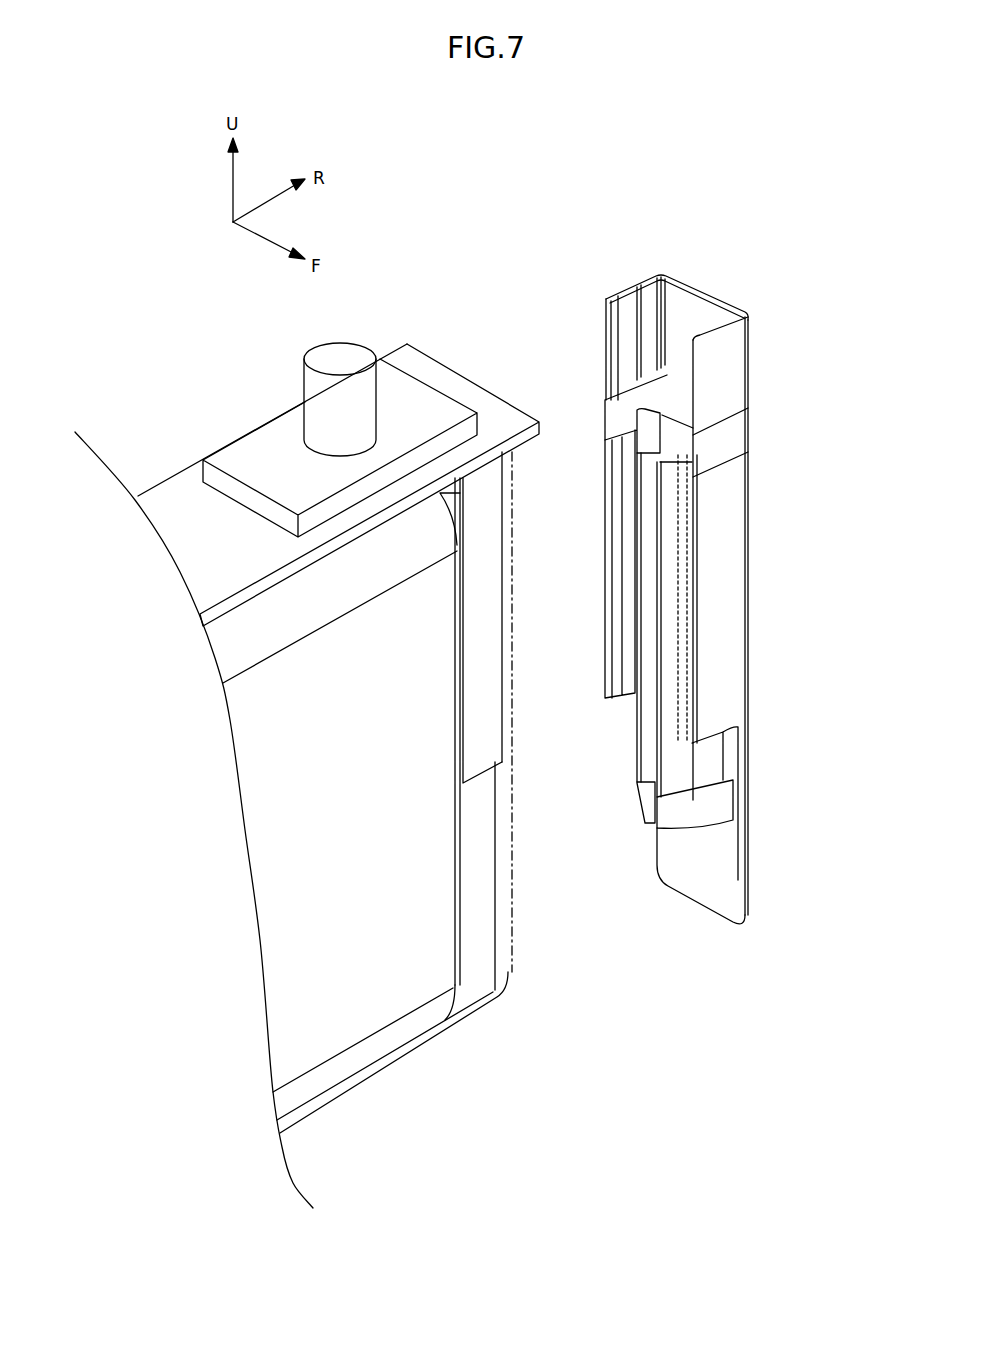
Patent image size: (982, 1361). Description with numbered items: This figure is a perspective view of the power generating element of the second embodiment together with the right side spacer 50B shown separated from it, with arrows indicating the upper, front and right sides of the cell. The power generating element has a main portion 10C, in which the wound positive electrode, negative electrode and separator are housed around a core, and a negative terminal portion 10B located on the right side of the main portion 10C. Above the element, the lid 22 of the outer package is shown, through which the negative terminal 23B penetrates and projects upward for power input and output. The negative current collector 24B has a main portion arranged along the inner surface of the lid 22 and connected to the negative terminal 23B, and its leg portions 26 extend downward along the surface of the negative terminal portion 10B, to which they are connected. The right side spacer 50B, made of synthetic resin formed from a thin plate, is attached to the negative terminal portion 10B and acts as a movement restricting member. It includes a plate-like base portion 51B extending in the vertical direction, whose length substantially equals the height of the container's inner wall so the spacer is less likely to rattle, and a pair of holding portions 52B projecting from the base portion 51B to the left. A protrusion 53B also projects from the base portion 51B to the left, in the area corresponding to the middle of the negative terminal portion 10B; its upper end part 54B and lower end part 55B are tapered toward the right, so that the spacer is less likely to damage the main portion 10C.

The lid 22 is at (165, 497).
The negative terminal 23B is at (340, 362).
The negative current collector 24B is at (480, 485).
The leg portions 26 is at (492, 692).
The negative terminal portion 10B is at (473, 973).
The main portion 10C is at (362, 1018).
The right side spacer 50B is at (684, 574).
The base portion 51B is at (698, 315).
The holding portions 52B is at (612, 660).
The protrusion 53B is at (650, 755).
The upper end part 54B is at (675, 430).
The lower end part 55B is at (685, 813).